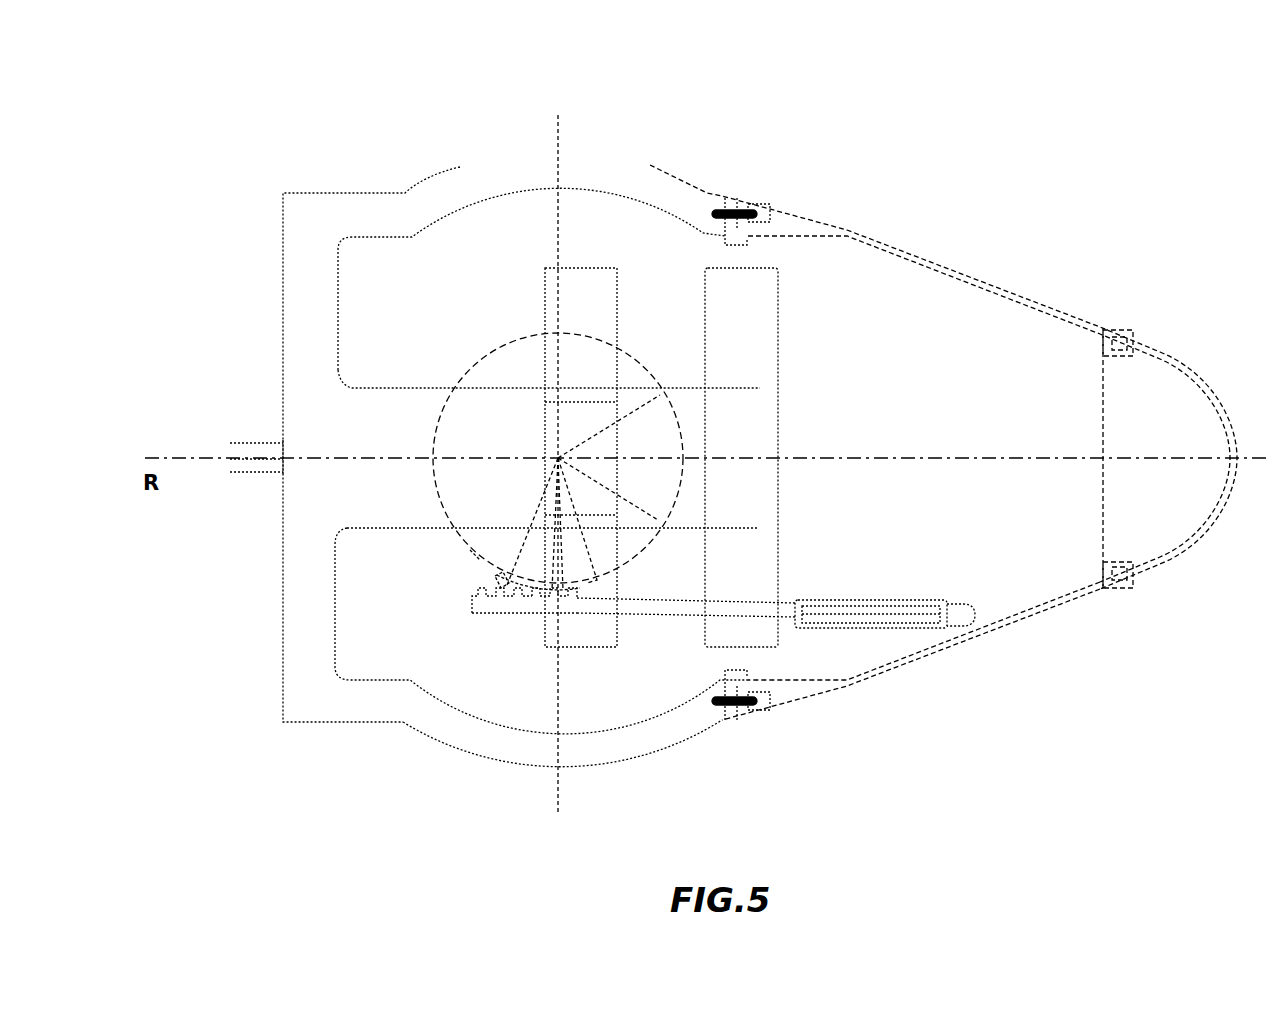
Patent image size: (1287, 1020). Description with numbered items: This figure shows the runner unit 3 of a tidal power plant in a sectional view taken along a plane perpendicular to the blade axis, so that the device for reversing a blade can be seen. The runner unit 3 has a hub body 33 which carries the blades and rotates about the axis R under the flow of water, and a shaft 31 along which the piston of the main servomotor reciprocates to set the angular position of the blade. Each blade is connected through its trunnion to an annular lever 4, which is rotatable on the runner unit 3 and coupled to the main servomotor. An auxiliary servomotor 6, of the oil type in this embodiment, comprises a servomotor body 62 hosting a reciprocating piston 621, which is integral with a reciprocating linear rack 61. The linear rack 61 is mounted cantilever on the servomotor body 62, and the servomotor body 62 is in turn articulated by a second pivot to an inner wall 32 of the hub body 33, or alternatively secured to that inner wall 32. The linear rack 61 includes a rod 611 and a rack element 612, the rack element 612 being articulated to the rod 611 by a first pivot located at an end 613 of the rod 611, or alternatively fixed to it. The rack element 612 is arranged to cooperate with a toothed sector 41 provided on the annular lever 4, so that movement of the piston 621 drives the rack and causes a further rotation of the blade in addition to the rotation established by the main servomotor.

The runner unit 3 is at (287, 170).
The shaft 31 is at (410, 458).
The inner wall 32 is at (970, 643).
The hub body 33 is at (647, 180).
The annular lever 4 is at (622, 535).
The toothed sector 41 is at (493, 583).
The auxiliary servomotor 6 is at (904, 670).
The reciprocating linear rack 61 is at (535, 701).
The rod 611 is at (695, 608).
The rack element 612 is at (516, 606).
The end of the rod 613 is at (578, 606).
The servomotor body 62 is at (883, 613).
The reciprocating piston 621 is at (825, 615).